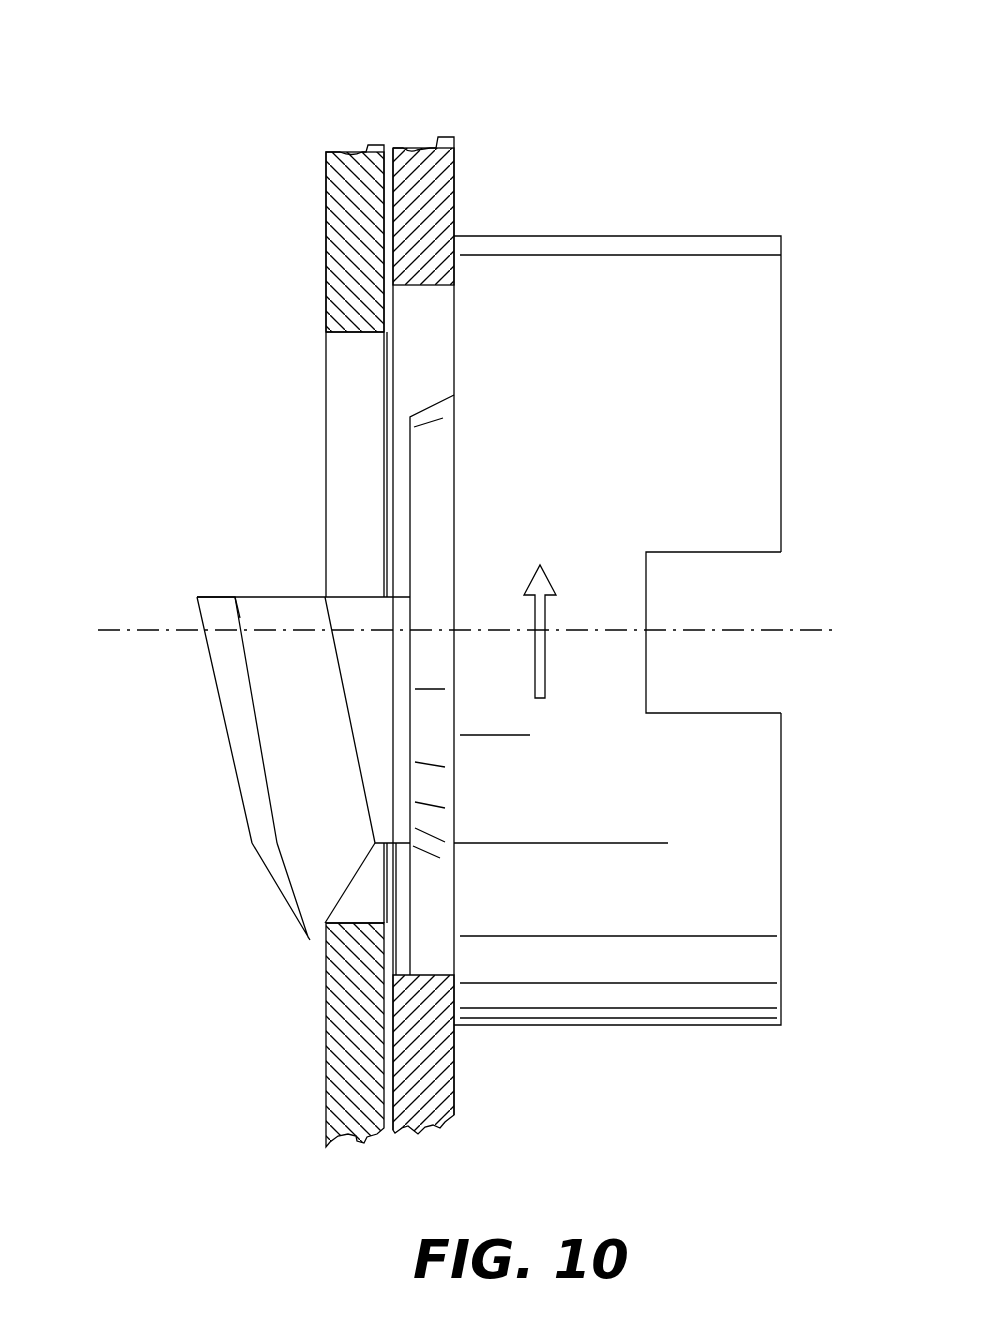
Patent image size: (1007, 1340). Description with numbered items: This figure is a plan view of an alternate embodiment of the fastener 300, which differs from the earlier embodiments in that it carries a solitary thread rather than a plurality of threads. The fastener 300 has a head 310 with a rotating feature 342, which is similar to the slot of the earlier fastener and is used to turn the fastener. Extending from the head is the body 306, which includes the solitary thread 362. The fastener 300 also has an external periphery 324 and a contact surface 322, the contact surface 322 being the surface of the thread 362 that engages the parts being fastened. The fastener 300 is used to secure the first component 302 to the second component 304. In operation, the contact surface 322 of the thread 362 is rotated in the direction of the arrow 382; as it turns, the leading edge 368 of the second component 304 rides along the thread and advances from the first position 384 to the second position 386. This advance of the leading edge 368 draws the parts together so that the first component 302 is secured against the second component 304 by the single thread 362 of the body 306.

The fastener 300 is at (597, 84).
The first component 302 is at (420, 155).
The second component 304 is at (352, 155).
The body 306 is at (270, 877).
The head 310 is at (782, 1025).
The contact surface 322 is at (299, 785).
The external periphery 324 is at (214, 603).
The rotating feature 342 is at (728, 713).
The solitary thread 362 is at (311, 941).
The leading edge 368 is at (350, 923).
The arrow 382 is at (545, 618).
The first position 384 is at (283, 612).
The second position 386 is at (325, 923).